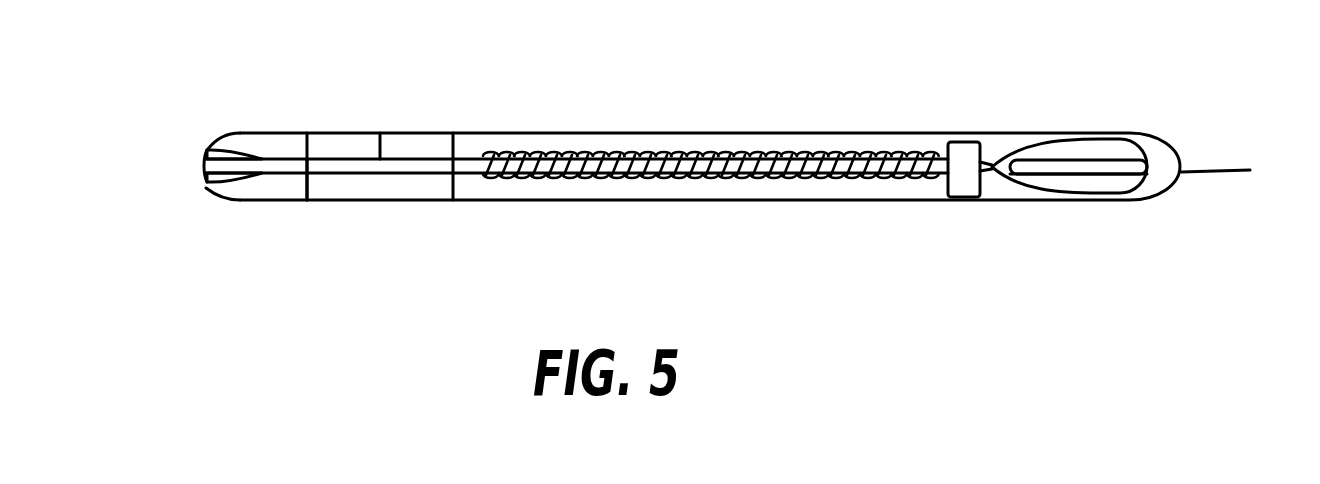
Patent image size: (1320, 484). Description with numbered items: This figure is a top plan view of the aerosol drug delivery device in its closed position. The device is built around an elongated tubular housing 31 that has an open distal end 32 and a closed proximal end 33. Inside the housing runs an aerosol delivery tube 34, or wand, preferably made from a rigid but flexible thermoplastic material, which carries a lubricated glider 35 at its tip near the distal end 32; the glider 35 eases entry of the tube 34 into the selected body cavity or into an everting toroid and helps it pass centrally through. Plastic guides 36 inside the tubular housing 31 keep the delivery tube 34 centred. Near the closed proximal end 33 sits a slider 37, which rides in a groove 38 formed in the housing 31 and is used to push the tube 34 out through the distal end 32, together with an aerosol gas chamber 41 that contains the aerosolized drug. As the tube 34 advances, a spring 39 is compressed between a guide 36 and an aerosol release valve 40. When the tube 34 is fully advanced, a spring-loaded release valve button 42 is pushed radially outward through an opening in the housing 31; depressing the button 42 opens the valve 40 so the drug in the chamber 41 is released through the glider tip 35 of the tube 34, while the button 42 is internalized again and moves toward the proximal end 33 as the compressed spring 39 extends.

The elongated tubular housing 31 is at (600, 132).
The open distal end 32 is at (212, 147).
The closed proximal end 33 is at (1243, 177).
The aerosol delivery tube 34 is at (380, 133).
The lubricated glider 35 is at (203, 179).
The plastic guides 36 is at (308, 200).
The slider 37 is at (1090, 163).
The groove 38 is at (1063, 183).
The spring 39 is at (717, 178).
The aerosol release valve 40 is at (959, 178).
The aerosol gas chamber 41 is at (1113, 137).
The spring-loaded release valve button 42 is at (963, 142).